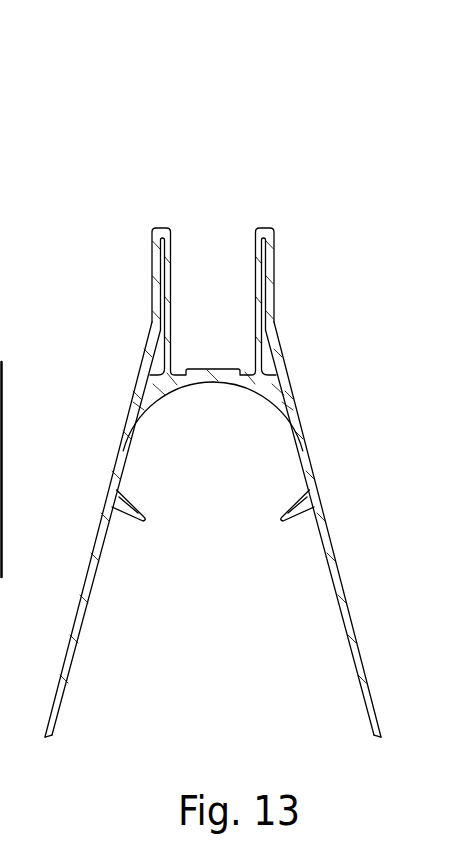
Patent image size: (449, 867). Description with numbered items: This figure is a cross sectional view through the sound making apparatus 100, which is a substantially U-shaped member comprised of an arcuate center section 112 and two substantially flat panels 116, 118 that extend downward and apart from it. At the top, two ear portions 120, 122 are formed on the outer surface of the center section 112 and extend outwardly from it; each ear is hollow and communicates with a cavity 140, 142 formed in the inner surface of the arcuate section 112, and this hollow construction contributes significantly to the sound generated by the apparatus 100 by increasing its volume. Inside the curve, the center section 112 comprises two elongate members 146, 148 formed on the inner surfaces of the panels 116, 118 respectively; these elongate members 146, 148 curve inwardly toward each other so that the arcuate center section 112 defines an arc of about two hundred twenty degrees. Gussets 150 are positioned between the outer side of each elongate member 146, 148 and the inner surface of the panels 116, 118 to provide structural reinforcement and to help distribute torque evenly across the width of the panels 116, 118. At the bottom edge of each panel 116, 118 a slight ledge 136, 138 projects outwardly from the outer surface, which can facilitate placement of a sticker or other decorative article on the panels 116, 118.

The sound making apparatus 100 is at (144, 133).
The arcuate center section 112 is at (302, 437).
The panel 116 is at (1, 587).
The panel 118 is at (343, 627).
The ear portion 120 is at (163, 226).
The ear portion 122 is at (266, 226).
The ledge 136 is at (45, 737).
The ledge 138 is at (383, 737).
The cavity 140 is at (155, 393).
The cavity 142 is at (270, 392).
The elongate member 146 is at (122, 475).
The elongate member 148 is at (283, 517).
The gusset 150 is at (120, 515).